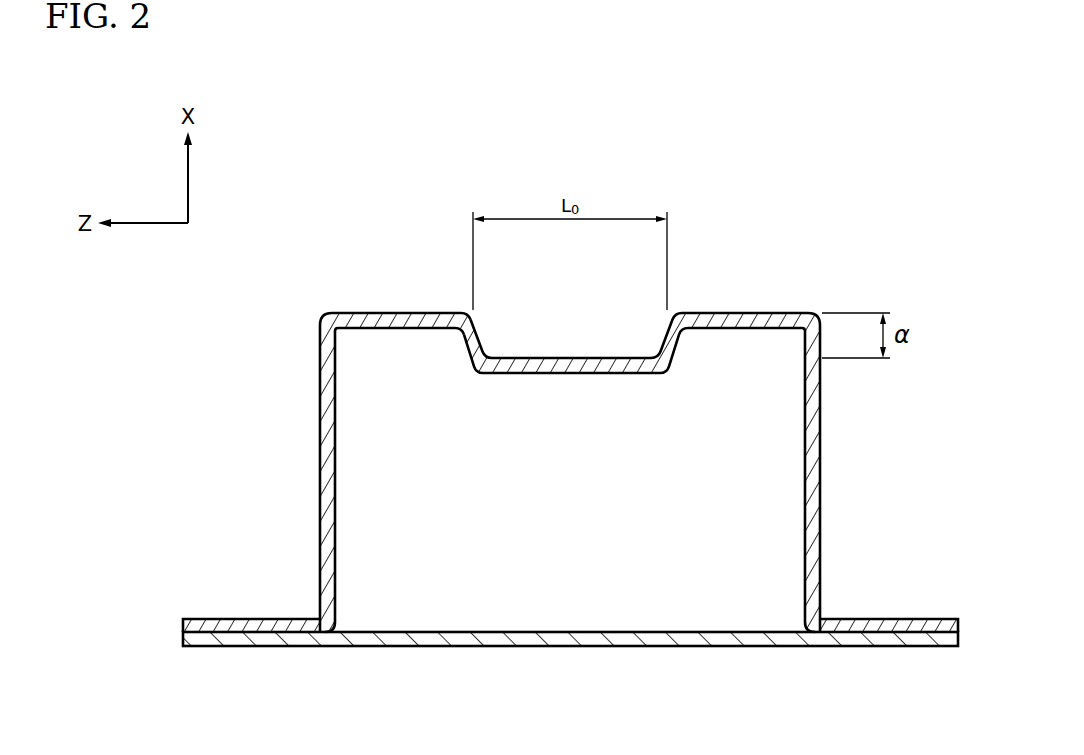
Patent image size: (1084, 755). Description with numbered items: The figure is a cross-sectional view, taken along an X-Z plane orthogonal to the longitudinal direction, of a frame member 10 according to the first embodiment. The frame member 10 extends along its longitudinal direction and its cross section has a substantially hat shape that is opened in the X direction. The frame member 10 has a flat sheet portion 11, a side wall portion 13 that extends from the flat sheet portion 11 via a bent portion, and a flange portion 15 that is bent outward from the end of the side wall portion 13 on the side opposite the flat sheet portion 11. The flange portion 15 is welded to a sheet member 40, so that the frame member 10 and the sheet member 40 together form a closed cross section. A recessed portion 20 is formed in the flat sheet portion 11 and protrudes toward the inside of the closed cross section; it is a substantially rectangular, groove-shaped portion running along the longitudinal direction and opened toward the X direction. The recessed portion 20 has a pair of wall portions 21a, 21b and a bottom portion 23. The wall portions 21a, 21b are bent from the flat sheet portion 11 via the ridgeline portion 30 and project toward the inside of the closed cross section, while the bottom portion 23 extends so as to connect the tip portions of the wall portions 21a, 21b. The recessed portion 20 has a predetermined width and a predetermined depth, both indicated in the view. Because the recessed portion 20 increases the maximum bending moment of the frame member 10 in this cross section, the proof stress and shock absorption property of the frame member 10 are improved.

The frame member 10 is at (801, 124).
The flat sheet portion 11 is at (380, 312).
The side wall portion 13 is at (320, 488).
The flange portion 15 is at (183, 622).
The recessed portion 20 is at (590, 150).
The wall portion 21a is at (487, 333).
The wall portion 21b is at (655, 333).
The bottom portion 23 is at (567, 357).
The ridgeline portion 30 is at (466, 300).
The sheet member 40 is at (572, 646).